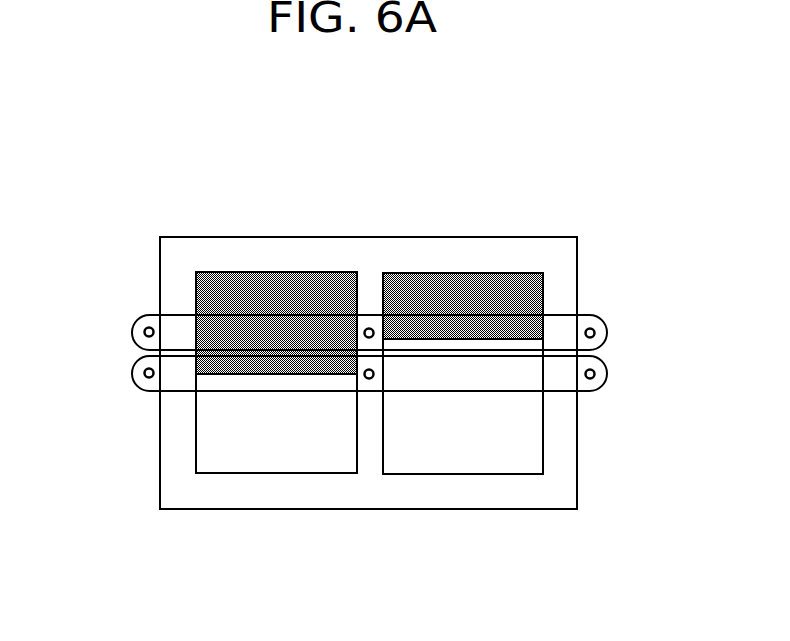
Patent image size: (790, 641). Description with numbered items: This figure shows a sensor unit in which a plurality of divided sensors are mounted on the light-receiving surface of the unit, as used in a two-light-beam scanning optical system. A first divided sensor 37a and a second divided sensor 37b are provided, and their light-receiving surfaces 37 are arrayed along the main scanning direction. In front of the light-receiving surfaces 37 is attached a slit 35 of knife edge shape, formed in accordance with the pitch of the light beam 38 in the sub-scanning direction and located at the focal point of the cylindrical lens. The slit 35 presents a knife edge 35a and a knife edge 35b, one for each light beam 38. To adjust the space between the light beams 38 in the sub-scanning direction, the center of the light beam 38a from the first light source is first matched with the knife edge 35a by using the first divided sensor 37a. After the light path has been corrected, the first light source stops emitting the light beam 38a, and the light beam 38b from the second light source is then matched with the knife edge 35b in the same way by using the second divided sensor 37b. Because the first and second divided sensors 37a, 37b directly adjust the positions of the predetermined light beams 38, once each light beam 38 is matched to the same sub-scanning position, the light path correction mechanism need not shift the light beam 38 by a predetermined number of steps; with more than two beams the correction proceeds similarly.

The slit 35 is at (433, 433).
The knife edge 35a is at (237, 374).
The knife edge 35b is at (498, 342).
The light-receiving surface 37 is at (374, 252).
The first divided sensor 37a is at (232, 283).
The second divided sensor 37b is at (472, 285).
The light beam 38 is at (372, 346).
The light beam 38a is at (132, 372).
The light beam 38b is at (133, 327).